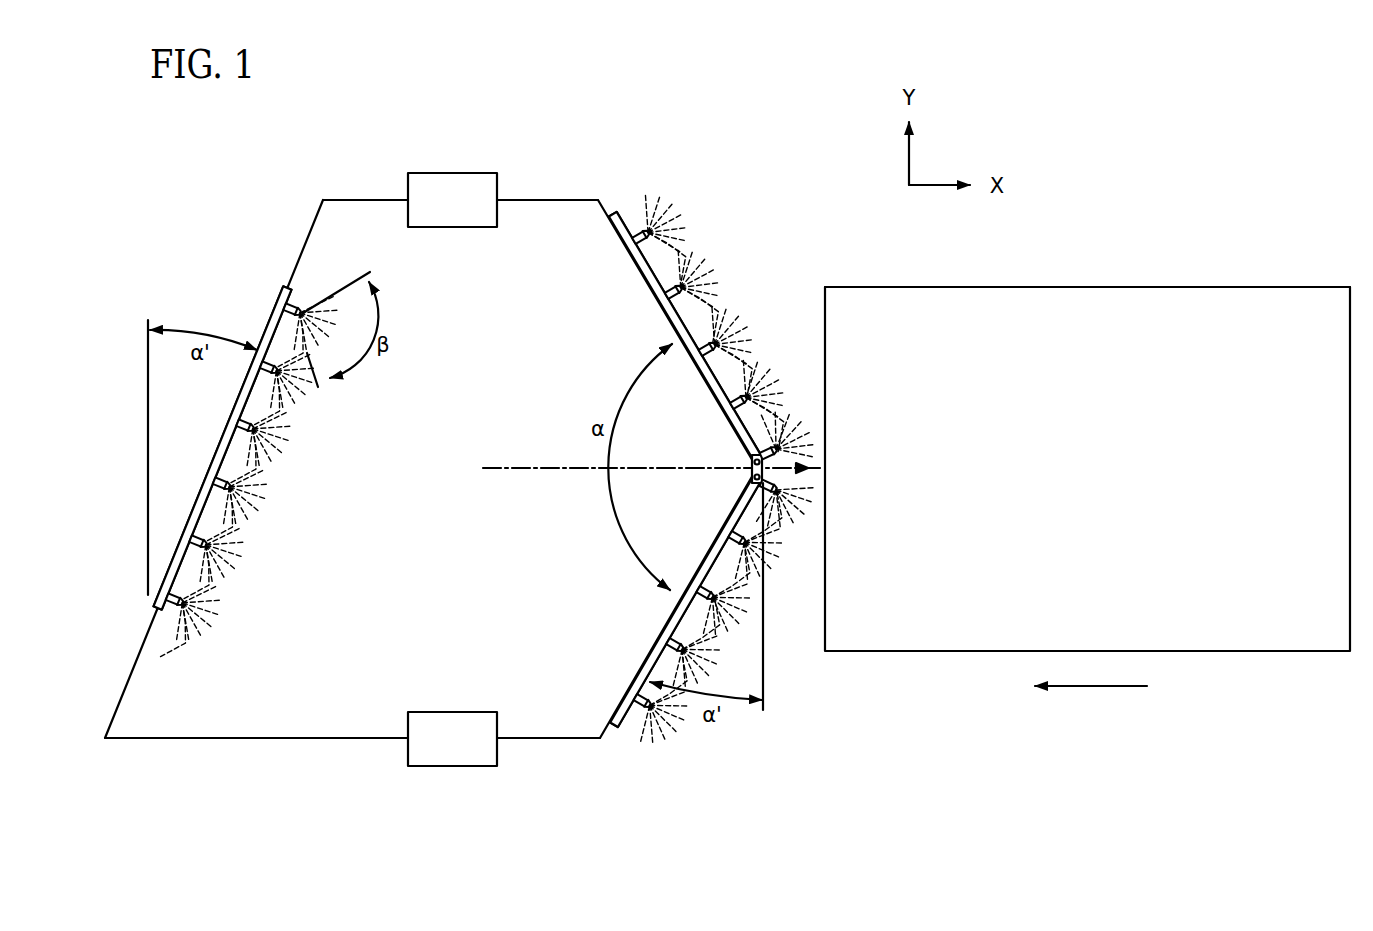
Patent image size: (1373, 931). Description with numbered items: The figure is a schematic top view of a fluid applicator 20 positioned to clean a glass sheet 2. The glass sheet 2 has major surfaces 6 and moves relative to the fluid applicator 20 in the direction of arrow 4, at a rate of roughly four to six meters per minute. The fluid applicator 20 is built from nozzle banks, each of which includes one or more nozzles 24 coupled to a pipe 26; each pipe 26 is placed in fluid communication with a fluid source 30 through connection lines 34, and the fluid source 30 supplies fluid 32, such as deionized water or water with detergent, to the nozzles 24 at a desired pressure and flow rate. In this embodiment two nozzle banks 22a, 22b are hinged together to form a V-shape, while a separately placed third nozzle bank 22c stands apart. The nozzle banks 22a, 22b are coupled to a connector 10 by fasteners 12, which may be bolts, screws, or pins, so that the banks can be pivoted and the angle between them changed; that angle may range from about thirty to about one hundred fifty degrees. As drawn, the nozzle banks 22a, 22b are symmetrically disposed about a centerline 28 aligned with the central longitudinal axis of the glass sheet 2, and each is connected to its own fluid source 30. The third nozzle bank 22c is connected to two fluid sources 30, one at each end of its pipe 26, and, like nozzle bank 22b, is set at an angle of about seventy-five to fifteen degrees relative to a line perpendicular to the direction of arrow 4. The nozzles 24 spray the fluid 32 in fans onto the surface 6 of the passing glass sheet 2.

The glass sheet 2 is at (1225, 292).
The arrow 4 is at (1115, 687).
The major surfaces 6 is at (1114, 320).
The connector 10 is at (752, 455).
The fasteners 12 is at (775, 487).
The fluid applicator 20 is at (521, 150).
The first nozzle bank 22a is at (624, 216).
The second nozzle bank 22b is at (622, 683).
The third nozzle bank 22c is at (278, 302).
The nozzles 24 is at (680, 287).
The pipe 26 is at (274, 332).
The centerline 28 is at (525, 468).
The fluid source 30 is at (430, 196).
The fluid 32 is at (278, 380).
The connection lines 34 is at (340, 200).